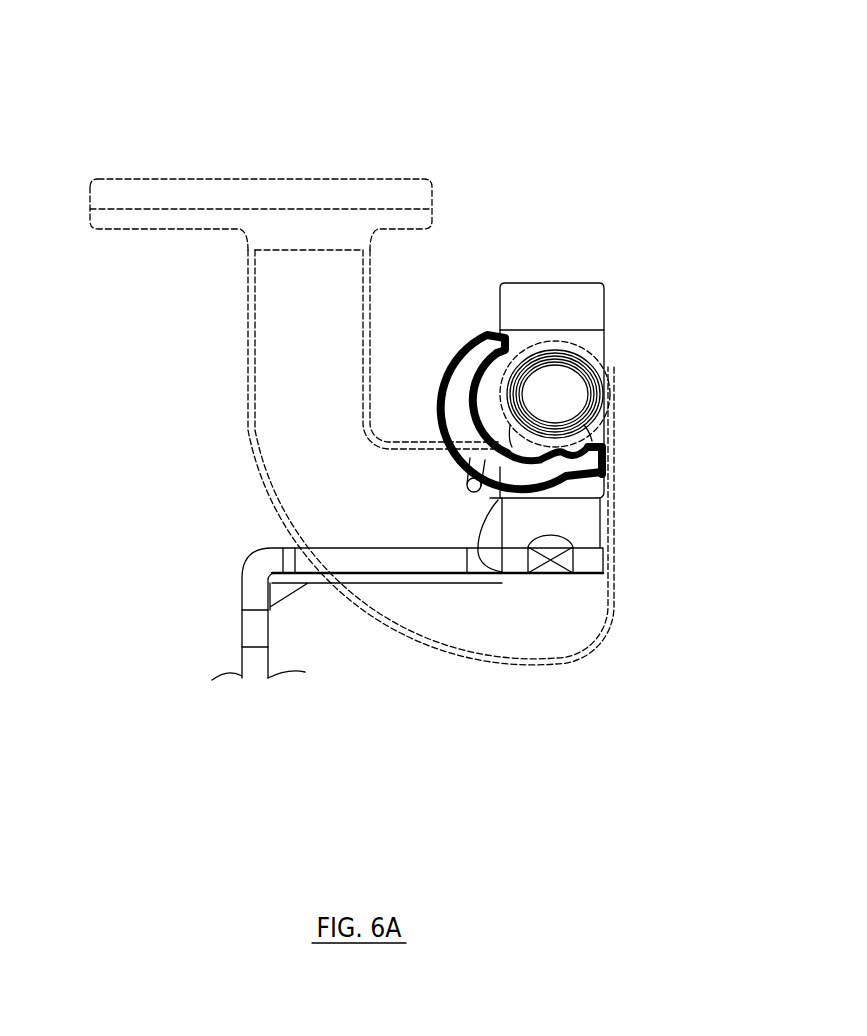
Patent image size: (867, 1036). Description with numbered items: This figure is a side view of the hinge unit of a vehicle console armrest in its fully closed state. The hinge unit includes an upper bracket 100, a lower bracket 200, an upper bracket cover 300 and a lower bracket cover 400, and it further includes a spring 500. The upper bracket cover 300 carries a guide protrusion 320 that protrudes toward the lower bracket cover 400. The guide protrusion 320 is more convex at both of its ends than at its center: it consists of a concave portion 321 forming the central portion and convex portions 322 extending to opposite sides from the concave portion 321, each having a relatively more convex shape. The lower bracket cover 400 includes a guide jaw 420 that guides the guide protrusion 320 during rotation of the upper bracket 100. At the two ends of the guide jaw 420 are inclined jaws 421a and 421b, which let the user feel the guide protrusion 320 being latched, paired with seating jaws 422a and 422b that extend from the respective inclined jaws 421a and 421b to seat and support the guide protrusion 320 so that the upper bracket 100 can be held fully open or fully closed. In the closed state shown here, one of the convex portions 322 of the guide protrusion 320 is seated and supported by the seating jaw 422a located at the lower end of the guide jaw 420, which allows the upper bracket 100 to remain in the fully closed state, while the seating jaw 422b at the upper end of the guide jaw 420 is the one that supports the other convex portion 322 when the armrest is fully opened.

The upper bracket 100 is at (262, 178).
The lower bracket 200 is at (243, 628).
The upper bracket cover 300 is at (290, 342).
The guide protrusion 320 is at (581, 302).
The concave portion 321 is at (547, 443).
The convex portion 322 is at (588, 442).
The lower bracket cover 400 is at (518, 283).
The guide jaw 420 is at (388, 548).
The inclined jaw 421a is at (562, 452).
The inclined jaw 421b is at (486, 358).
The seating jaw 422a is at (600, 474).
The seating jaw 422b is at (458, 352).
The spring 500 is at (466, 484).